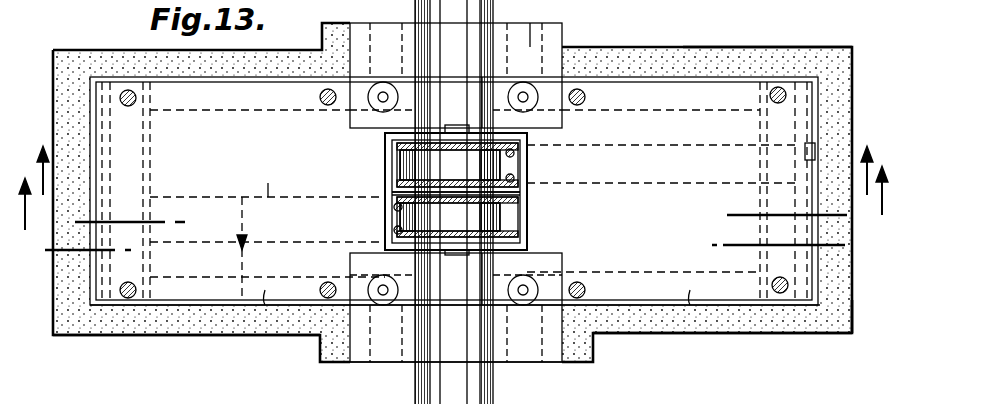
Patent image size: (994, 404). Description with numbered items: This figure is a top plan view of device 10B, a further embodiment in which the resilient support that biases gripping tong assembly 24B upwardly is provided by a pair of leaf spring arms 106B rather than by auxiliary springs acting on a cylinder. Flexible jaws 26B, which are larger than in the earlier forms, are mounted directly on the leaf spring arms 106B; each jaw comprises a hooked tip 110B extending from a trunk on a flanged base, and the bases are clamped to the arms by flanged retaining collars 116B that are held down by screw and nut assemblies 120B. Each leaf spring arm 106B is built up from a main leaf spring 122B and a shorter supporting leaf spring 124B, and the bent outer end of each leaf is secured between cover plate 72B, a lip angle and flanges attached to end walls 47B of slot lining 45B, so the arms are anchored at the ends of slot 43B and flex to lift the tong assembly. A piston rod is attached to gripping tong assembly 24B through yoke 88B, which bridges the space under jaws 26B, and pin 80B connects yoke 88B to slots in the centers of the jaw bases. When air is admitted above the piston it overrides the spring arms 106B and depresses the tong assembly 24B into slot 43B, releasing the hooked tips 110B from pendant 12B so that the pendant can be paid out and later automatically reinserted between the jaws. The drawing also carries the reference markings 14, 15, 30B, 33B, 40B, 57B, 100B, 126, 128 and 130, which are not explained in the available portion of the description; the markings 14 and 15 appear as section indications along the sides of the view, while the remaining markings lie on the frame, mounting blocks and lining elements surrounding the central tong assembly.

The device 10B is at (683, 47).
The pendant 12B is at (483, 375).
The section line 14 is at (453, 213).
The section line 15 is at (451, 189).
The gripping tong assembly 24B is at (527, 200).
The flexible jaws 26B is at (525, 180).
The mounting block 30B is at (545, 42).
The channel 33B is at (535, 42).
The lower mounting block 40B is at (392, 362).
The slot 43B is at (392, 148).
The slot lining 45B is at (128, 312).
The end walls 47B is at (145, 97).
The fastening screw 57B is at (283, 80).
The cover plate 72B is at (265, 292).
The pin 80B is at (400, 250).
The yoke 88B is at (520, 252).
The base plate 100B is at (230, 305).
The leaf spring arms 106B is at (730, 140).
The hooked tips 110B is at (400, 215).
The flanged retaining collars 116B is at (386, 200).
The screw and nut assemblies 120B is at (395, 243).
The main leaf spring 122B is at (660, 140).
The supporting leaf spring 124B is at (200, 197).
The stop 126 is at (815, 155).
The corner 128 is at (828, 310).
The edge 130 is at (800, 345).